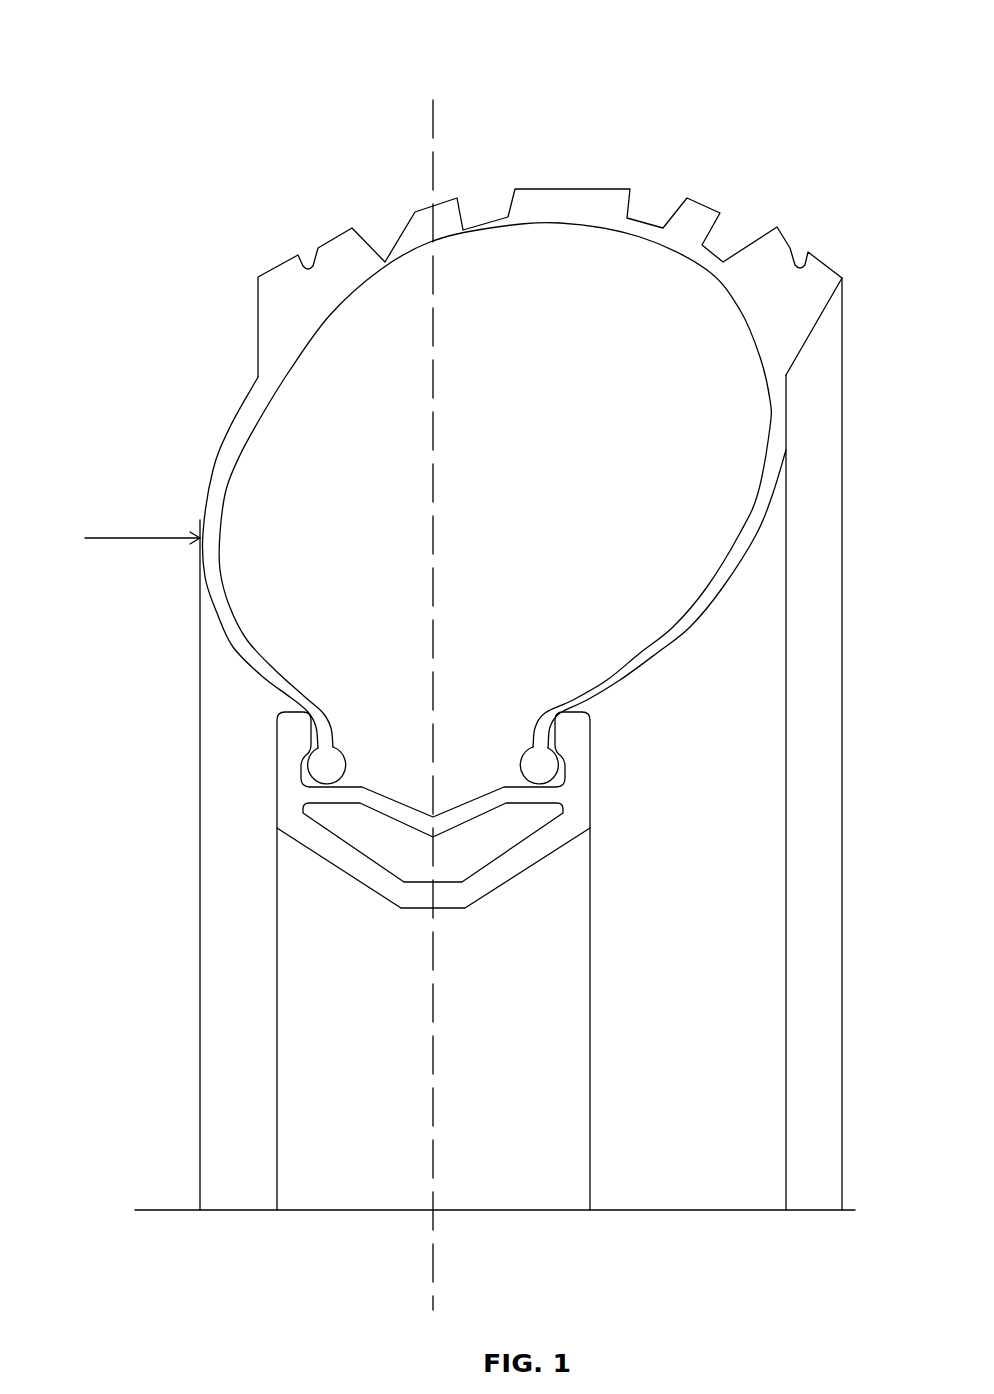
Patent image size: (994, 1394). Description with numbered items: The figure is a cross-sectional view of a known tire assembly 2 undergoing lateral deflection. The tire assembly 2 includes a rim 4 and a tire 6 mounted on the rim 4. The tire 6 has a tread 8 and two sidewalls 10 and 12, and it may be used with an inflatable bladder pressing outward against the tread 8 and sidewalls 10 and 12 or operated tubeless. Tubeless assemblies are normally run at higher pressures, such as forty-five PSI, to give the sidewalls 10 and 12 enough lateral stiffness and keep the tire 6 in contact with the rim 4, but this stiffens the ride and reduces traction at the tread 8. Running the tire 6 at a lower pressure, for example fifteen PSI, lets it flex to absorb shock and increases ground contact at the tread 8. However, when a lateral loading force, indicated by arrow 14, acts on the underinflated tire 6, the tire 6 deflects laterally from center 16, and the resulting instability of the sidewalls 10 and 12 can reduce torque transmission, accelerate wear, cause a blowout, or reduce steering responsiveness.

The tire assembly 2 is at (834, 98).
The rim 4 is at (277, 796).
The tire 6 is at (508, 426).
The tread 8 is at (543, 188).
The sidewall 10 is at (317, 703).
The sidewall 12 is at (540, 708).
The arrow 14 is at (110, 538).
The center 16 is at (435, 1262).